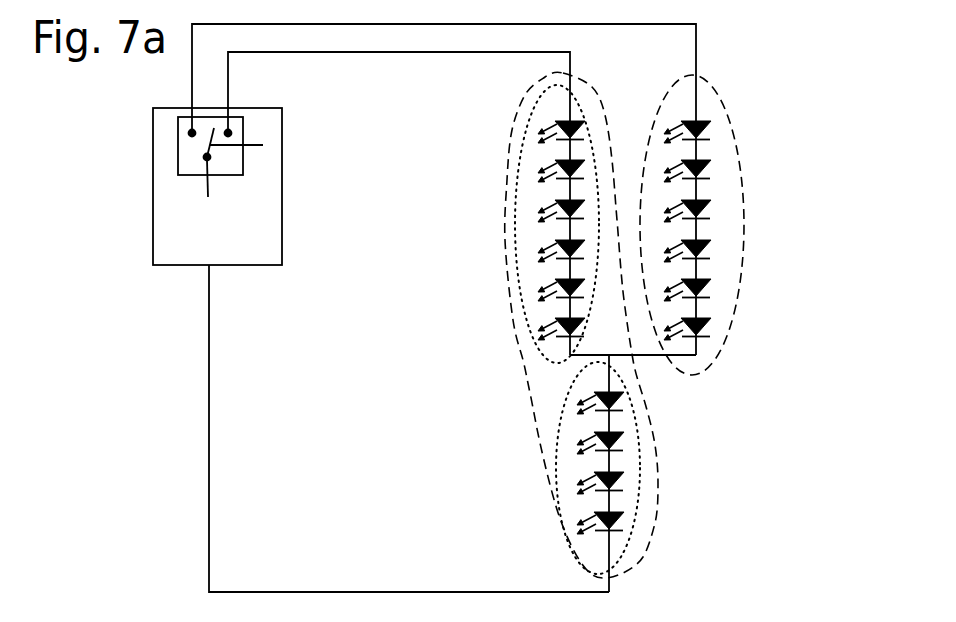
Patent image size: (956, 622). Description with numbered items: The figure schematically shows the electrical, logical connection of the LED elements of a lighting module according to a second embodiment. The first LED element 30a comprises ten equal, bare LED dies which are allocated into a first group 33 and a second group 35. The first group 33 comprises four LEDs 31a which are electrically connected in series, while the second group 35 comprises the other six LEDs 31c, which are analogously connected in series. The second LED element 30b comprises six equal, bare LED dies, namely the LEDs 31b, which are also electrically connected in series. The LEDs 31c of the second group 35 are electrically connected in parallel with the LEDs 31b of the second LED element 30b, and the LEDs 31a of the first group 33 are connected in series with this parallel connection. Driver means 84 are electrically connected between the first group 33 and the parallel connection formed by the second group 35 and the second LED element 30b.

The driver means 84 is at (153, 265).
The first LED element 30a is at (530, 362).
The second LED element 30b is at (745, 200).
The second group 35 is at (520, 155).
The first group 33 is at (555, 472).
The LEDs 31a is at (622, 515).
The LEDs 31b is at (708, 323).
The LEDs 31c is at (545, 335).